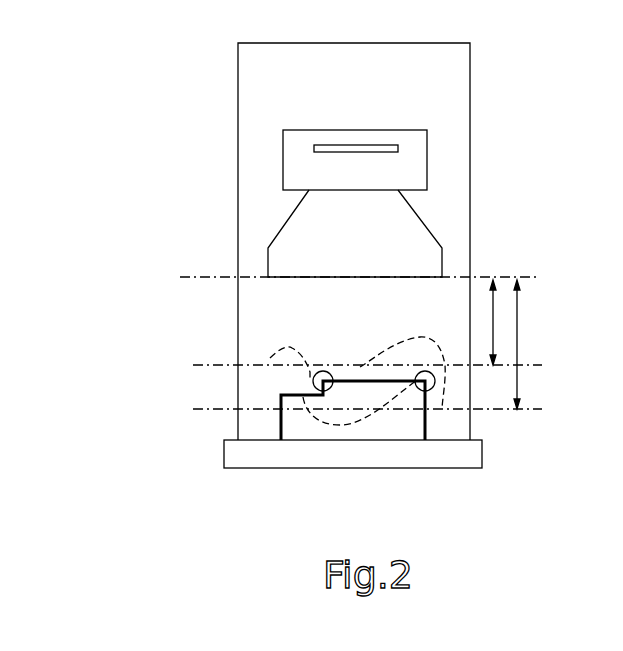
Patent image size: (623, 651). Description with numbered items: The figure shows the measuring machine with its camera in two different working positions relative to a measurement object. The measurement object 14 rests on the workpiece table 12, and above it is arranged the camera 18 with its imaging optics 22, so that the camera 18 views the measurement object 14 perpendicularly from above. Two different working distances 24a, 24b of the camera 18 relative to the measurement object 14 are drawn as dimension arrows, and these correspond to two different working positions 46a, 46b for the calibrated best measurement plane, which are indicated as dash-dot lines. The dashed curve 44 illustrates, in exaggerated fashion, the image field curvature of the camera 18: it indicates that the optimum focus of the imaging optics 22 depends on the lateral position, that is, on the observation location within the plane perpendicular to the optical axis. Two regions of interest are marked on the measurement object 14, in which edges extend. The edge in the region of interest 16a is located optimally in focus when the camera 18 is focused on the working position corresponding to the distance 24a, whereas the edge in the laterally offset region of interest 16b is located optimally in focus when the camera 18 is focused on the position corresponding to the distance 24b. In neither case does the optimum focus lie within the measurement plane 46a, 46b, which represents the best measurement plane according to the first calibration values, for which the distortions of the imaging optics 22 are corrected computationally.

The workpiece table 12 is at (397, 455).
The measurement object 14 is at (300, 435).
The region of interest 16a is at (433, 380).
The region of interest 16b is at (330, 371).
The camera 18 is at (422, 165).
The imaging optics 22 is at (413, 230).
The working distance 24a is at (518, 320).
The working distance 24b is at (493, 338).
The image field curvature curve 44 is at (357, 430).
The working position 46a is at (212, 408).
The working position 46b is at (207, 364).